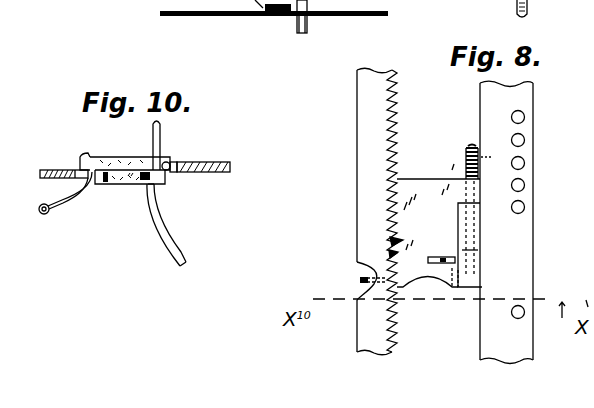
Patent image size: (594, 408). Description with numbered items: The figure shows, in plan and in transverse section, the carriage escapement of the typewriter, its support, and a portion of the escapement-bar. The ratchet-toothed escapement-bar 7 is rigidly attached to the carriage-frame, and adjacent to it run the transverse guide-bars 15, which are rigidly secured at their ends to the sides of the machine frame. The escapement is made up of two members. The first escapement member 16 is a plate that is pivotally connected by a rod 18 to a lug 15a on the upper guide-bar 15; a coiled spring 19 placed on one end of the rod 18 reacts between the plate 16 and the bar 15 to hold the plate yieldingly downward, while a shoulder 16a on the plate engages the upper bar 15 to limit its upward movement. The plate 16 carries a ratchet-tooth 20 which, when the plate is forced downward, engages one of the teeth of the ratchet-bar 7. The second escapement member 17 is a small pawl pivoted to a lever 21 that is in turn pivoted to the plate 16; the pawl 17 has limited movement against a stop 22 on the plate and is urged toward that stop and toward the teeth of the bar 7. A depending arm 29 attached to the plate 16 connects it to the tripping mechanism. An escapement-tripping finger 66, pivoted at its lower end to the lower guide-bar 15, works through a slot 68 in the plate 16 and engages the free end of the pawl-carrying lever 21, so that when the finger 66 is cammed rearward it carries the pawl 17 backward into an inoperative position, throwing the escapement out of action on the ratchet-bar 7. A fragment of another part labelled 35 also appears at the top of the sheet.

In FIG. 8, the ratchet-toothed escapement-bar 7 is at (357, 160).
In FIG. 10, the ratchet-toothed escapement-bar 7 is at (48, 170).
In FIG. 8, the guide-bar 15 is at (522, 292).
In FIG. 10, the guide-bar 15 is at (229, 168).
In FIG. 8, the lug 15a is at (470, 250).
In FIG. 8, the escapement member 16 is at (424, 190).
In FIG. 10, the escapement member 16 is at (130, 164).
In FIG. 10, the shoulder 16a is at (176, 160).
In FIG. 8, the escapement member 17 is at (366, 257).
In FIG. 10, the escapement member 17 is at (133, 186).
In FIG. 8, the rod 18 is at (473, 146).
In FIG. 10, the rod 18 is at (166, 161).
In FIG. 8, the coiled spring 19 is at (468, 163).
In FIG. 8, the ratchet-tooth 20 is at (392, 241).
In FIG. 10, the ratchet-tooth 20 is at (84, 158).
In FIG. 10, the lever 21 is at (143, 186).
In FIG. 10, the stop 22 is at (105, 180).
In FIG. 8, the depending arm 29 is at (362, 280).
In FIG. 10, the depending arm 29 is at (66, 206).
In FIG. 8, the bar 35 is at (212, 16).
In FIG. 8, the escapement-tripping finger 66 is at (446, 265).
In FIG. 10, the escapement-tripping finger 66 is at (178, 258).
In FIG. 8, the slot 68 is at (432, 264).